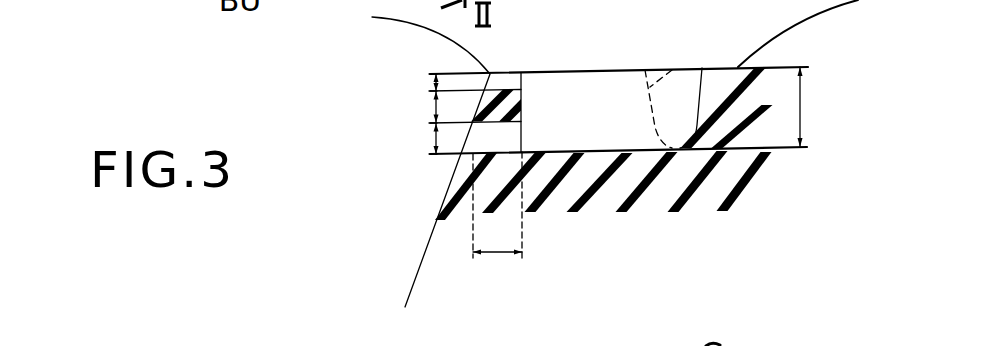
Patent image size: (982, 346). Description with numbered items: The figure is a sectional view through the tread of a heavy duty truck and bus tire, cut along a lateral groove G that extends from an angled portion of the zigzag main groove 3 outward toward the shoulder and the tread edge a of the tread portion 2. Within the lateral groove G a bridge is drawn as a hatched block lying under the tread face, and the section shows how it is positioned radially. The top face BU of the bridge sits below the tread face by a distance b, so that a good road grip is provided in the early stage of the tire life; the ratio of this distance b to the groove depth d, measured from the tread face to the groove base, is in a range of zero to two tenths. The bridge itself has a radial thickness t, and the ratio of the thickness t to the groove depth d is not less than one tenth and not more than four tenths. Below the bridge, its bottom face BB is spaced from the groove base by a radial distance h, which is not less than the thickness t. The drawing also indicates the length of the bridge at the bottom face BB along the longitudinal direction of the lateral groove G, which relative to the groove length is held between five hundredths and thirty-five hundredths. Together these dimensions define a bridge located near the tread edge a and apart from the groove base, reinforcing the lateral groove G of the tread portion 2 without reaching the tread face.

The tread portion 2 is at (811, 33).
The main groove 3 is at (684, 62).
The lateral groove G is at (572, 112).
The top face of the bridge BU is at (521, 186).
The bottom face of the bridge BB is at (526, 182).
The tread edge a is at (419, 153).
The distance b is at (434, 86).
The thickness of the bridge t is at (434, 108).
The radial distance h is at (434, 137).
The groove depth d is at (802, 100).